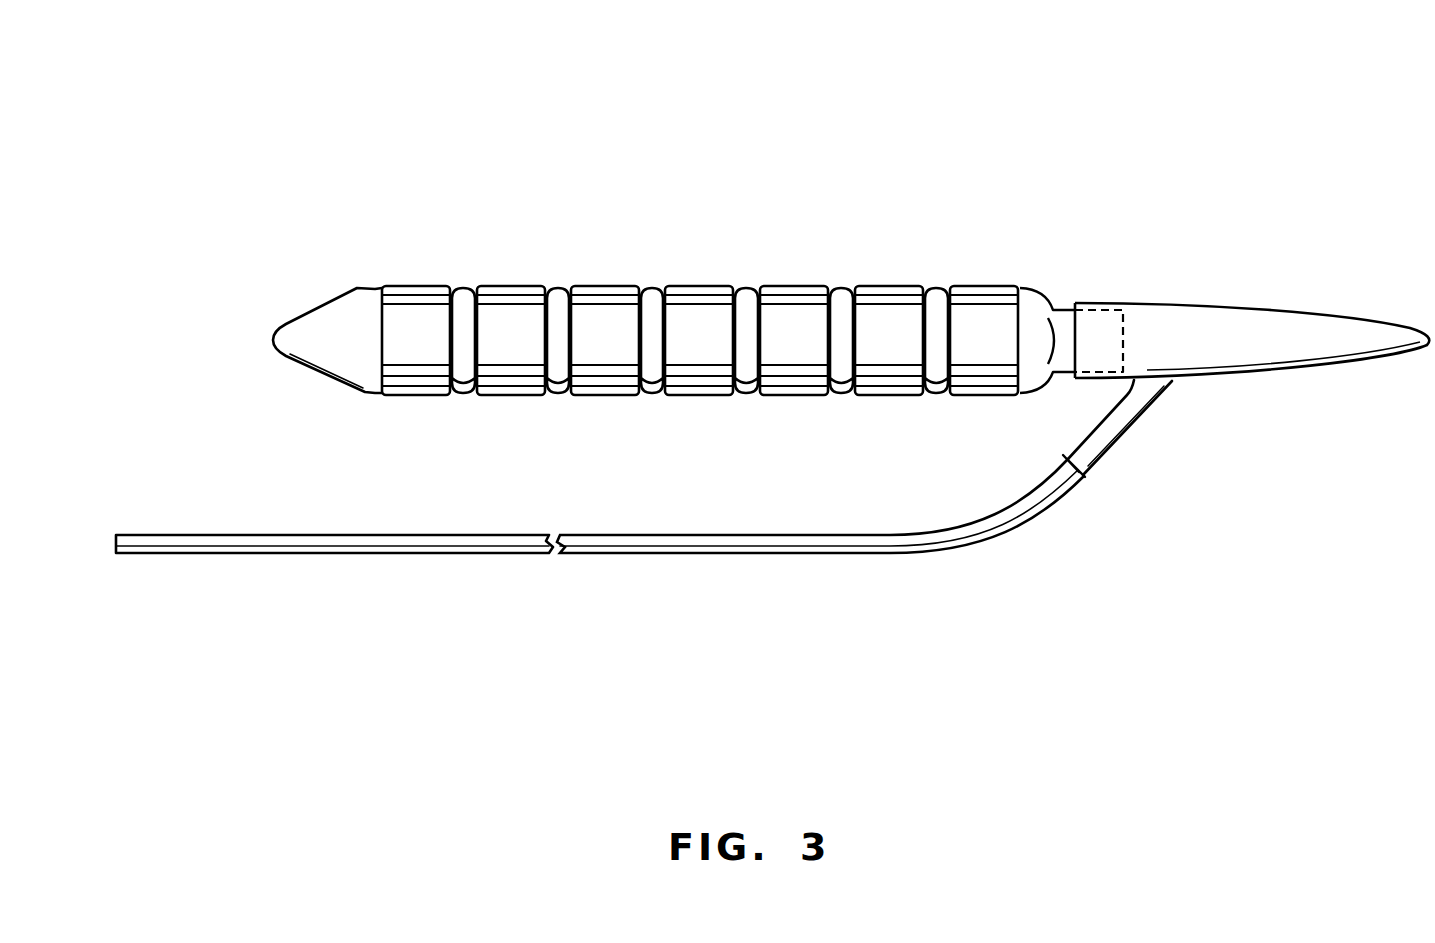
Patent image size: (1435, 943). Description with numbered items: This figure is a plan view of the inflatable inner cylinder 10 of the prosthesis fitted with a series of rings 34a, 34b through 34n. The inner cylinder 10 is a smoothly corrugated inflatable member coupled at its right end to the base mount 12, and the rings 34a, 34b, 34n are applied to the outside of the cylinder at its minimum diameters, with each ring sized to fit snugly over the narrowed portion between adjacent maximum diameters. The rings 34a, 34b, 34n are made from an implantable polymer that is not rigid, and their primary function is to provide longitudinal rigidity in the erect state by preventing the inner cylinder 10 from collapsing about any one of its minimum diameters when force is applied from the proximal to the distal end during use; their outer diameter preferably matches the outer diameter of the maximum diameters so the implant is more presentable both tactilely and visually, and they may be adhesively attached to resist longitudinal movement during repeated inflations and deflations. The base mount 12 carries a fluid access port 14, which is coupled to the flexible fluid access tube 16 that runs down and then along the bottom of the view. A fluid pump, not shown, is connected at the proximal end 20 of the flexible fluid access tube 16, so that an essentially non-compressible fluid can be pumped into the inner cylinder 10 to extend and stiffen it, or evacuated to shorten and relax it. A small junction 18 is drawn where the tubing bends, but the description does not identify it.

The inner cylinder 10 is at (296, 136).
The base mount 12 is at (1298, 332).
The fluid access port 14 is at (1135, 408).
The flexible fluid access tube 16 is at (953, 540).
The tube connector joint 18 is at (1077, 477).
The proximal end 20 is at (117, 548).
The ring 34a is at (1002, 287).
The ring 34b is at (885, 287).
The ring 34n is at (415, 287).